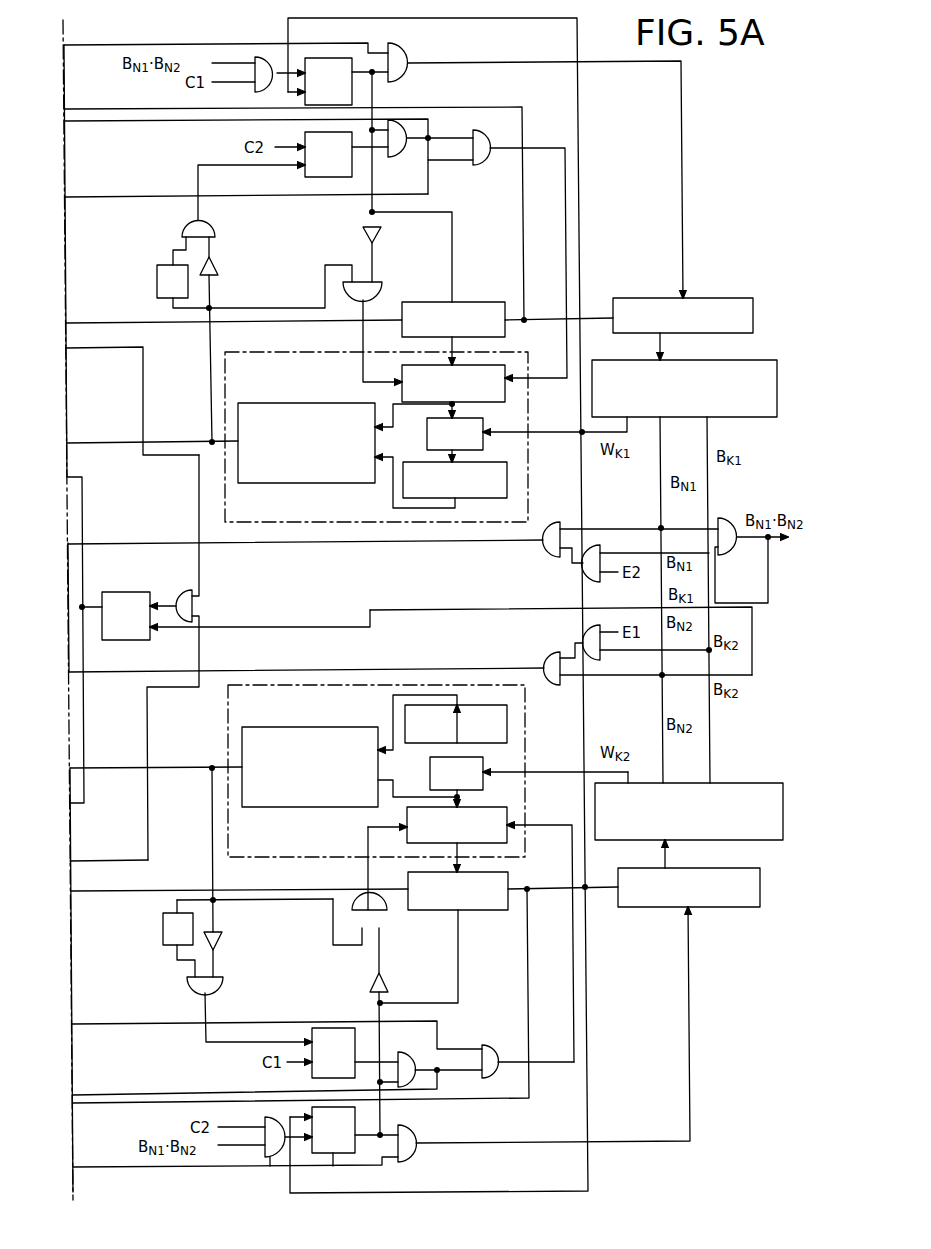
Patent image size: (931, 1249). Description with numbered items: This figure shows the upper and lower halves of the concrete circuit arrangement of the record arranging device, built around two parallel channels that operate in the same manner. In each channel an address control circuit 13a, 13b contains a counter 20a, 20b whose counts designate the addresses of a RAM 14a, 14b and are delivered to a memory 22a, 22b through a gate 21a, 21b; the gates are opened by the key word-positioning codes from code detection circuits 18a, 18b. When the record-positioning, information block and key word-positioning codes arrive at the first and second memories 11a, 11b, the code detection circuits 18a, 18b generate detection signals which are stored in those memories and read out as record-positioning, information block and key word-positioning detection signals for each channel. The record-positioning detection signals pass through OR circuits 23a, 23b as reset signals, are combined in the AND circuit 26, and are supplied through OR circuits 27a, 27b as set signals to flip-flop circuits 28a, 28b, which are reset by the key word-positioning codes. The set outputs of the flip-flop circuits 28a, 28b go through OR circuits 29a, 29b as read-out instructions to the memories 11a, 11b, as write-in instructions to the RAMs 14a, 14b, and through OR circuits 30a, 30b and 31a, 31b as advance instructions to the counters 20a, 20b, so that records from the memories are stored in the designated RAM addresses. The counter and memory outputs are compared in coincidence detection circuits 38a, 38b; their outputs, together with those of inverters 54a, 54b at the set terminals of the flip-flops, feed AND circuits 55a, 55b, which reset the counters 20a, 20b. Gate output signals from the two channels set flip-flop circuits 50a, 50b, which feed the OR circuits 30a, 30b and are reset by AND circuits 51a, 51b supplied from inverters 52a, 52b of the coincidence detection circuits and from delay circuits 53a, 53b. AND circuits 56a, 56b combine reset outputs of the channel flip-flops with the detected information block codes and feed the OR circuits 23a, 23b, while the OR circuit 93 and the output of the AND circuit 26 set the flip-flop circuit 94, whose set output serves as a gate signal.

The OR circuit 27a is at (262, 57).
The flip-flop circuit 28a is at (328, 58).
The OR circuit 29a is at (398, 46).
The OR circuit 30a is at (392, 121).
The OR circuit 31a is at (486, 165).
The flip-flop circuit 50a is at (306, 178).
The AND circuit 51a is at (184, 228).
The inverter 52a is at (216, 268).
The delay circuit 53a is at (157, 285).
The inverter 54a is at (380, 235).
The AND circuit 55a is at (376, 286).
The RAM 14a is at (478, 302).
The address control circuit 13a is at (530, 472).
The counter 20a is at (502, 365).
The gate 21a is at (480, 418).
The memory 22a is at (398, 498).
The coincidence detection circuit 38a is at (272, 403).
The first memory 11a is at (733, 298).
The code detection circuit 18a is at (772, 360).
The OR circuit 23a is at (548, 555).
The AND circuit 56a is at (585, 575).
The AND circuit 26 is at (737, 550).
The AND circuit 56b is at (585, 633).
The OR circuit 23b is at (545, 660).
The flip-flop circuit 94 is at (130, 587).
The OR circuit 93 is at (182, 591).
The address control circuit 13b is at (527, 740).
The memory 22b is at (508, 714).
The gate 21b is at (486, 784).
The counter 20b is at (508, 838).
The coincidence detection circuit 38b is at (262, 807).
The RAM 14b is at (482, 910).
The AND circuit 55b is at (385, 928).
The inverter 54b is at (370, 986).
The delay circuit 53b is at (163, 919).
The inverter 52b is at (222, 940).
The AND circuit 51b is at (188, 985).
The flip-flop circuit 50b is at (357, 1038).
The OR circuit 30b is at (402, 1088).
The OR circuit 31b is at (488, 1046).
The OR circuit 29b is at (404, 1162).
The flip-flop circuit 28b is at (333, 1149).
The OR circuit 27b is at (270, 1160).
The second memory 11b is at (760, 878).
The code detection circuit 18b is at (768, 783).